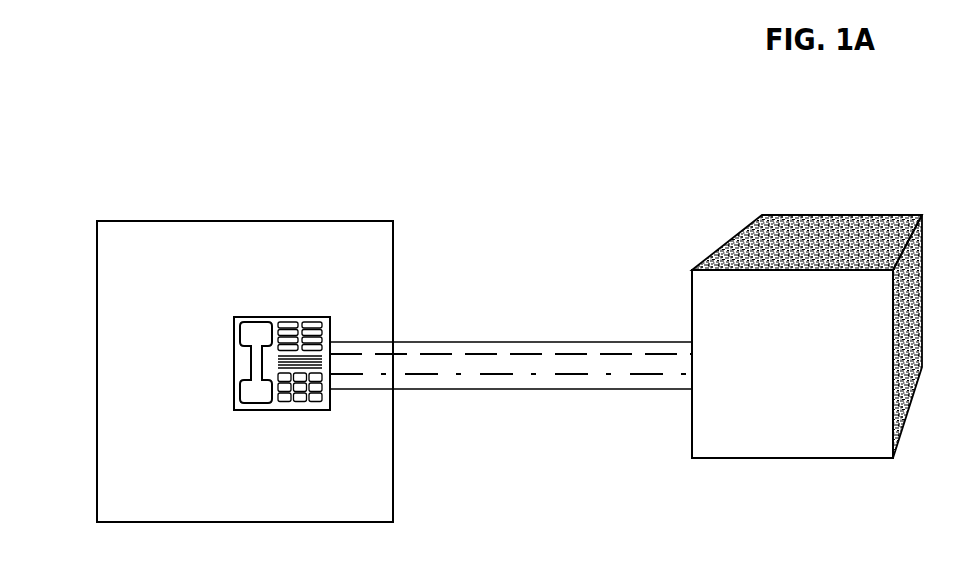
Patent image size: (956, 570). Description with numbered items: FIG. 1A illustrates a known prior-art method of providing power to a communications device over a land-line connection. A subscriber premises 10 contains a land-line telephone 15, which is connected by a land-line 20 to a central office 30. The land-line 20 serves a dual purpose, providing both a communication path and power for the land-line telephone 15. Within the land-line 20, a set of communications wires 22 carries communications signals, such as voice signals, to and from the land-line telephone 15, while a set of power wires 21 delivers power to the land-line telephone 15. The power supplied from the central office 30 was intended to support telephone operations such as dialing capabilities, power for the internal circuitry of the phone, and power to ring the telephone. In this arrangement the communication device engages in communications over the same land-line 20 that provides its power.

The subscriber premises 10 is at (103, 317).
The land-line telephone 15 is at (265, 315).
The land-line 20 is at (511, 358).
The set of power wires 21 is at (647, 374).
The set of communications wires 22 is at (537, 354).
The central office 30 is at (727, 245).